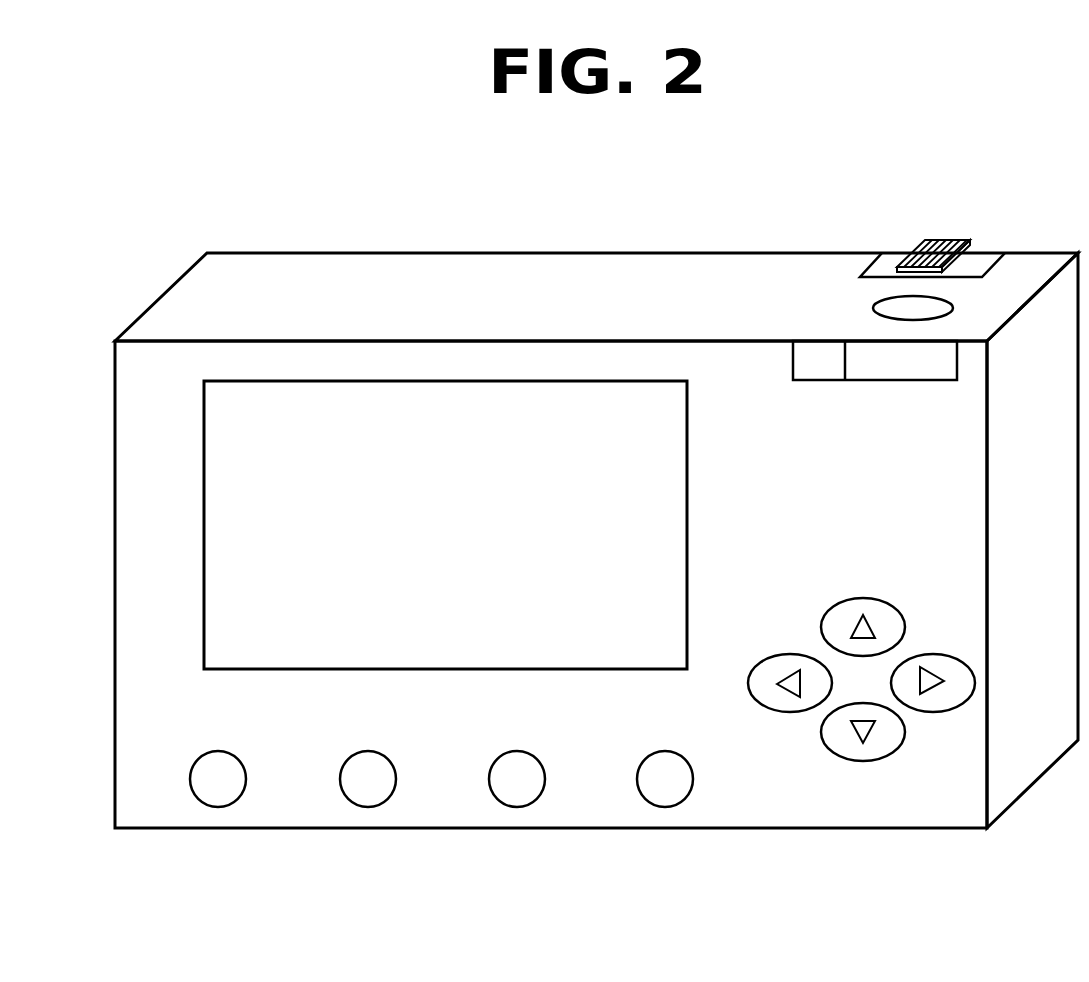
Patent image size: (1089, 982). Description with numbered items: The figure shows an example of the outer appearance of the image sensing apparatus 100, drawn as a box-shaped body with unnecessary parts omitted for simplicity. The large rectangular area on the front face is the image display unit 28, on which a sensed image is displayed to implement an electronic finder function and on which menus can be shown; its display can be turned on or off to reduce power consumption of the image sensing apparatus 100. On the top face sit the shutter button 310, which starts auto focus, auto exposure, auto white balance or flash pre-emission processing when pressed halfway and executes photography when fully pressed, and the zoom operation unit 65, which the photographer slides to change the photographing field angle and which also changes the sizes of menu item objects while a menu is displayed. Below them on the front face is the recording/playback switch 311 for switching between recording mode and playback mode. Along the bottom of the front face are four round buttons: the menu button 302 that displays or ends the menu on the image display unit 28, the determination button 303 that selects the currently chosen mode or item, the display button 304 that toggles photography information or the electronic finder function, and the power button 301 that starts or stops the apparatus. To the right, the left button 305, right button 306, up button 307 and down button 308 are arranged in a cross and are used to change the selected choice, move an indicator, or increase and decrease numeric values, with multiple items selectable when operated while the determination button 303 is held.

The image sensing apparatus 100 is at (268, 193).
The zoom operation unit 65 is at (948, 238).
The shutter button 310 is at (873, 309).
The recording/playback switch 311 is at (897, 381).
The image display unit 28 is at (687, 479).
The up button 307 is at (863, 598).
The left button 305 is at (778, 652).
The right button 306 is at (943, 654).
The down button 308 is at (865, 762).
The menu button 302 is at (218, 808).
The determination button 303 is at (368, 808).
The display button 304 is at (517, 808).
The power button 301 is at (665, 808).